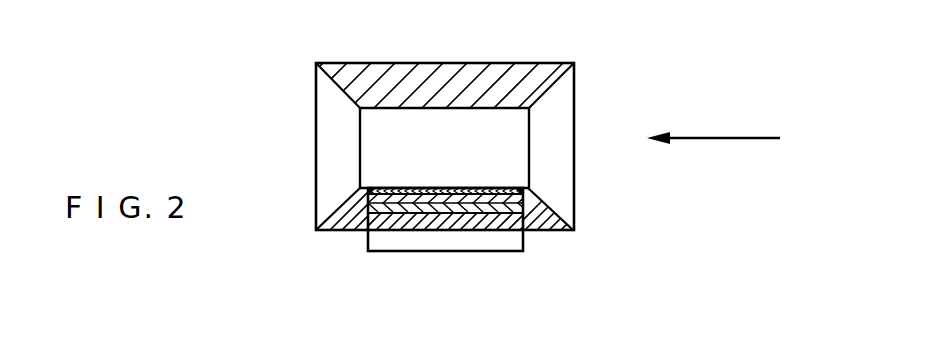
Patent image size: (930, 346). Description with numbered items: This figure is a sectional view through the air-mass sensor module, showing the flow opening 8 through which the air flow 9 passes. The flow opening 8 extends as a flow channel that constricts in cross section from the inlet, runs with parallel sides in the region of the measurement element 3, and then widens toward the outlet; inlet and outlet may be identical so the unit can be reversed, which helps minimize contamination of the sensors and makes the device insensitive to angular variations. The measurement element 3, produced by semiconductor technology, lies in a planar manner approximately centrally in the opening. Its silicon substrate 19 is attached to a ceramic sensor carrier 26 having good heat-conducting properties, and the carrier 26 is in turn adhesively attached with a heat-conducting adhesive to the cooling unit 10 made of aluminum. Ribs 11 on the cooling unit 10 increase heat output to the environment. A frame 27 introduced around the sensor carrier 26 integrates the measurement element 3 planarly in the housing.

The flow opening 8 is at (514, 124).
The air flow 9 is at (713, 125).
The measurement element 3 is at (500, 187).
The frame 27 is at (368, 190).
The substrate 19 is at (366, 197).
The sensor carrier 26 is at (540, 222).
The cooling unit 10 is at (532, 235).
The ribs 11 is at (432, 243).